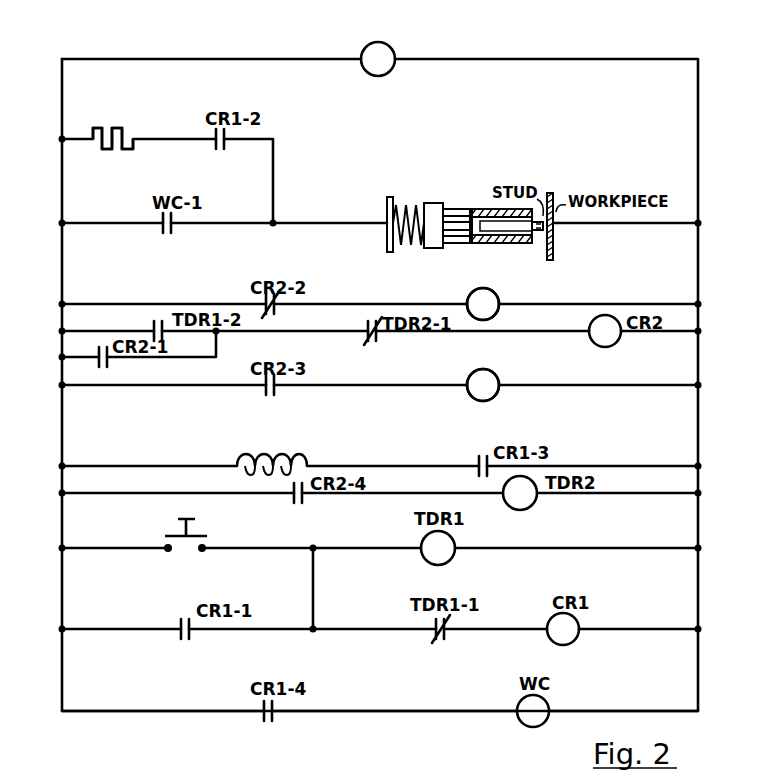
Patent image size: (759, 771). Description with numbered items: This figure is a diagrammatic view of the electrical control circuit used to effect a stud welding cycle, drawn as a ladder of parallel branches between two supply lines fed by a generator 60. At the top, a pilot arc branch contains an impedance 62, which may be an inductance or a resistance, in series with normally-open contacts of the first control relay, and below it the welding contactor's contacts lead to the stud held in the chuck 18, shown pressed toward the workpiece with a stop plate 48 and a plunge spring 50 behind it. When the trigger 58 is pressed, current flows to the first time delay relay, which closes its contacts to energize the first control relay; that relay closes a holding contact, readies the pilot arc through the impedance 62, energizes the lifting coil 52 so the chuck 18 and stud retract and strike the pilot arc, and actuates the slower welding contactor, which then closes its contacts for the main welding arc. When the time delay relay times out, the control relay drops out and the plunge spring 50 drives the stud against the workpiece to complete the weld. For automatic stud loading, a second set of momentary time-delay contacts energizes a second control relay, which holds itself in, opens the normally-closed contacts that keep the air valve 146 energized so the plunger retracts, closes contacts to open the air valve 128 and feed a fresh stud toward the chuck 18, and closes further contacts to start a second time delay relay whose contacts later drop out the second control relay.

The generator 60 is at (392, 54).
The impedance 62 is at (121, 127).
The plunge spring 50 is at (400, 206).
The stop plate 48 is at (388, 250).
The chuck 18 is at (476, 208).
The valve 146 is at (498, 301).
The air valve 128 is at (498, 382).
The lifting coil 52 is at (280, 455).
The trigger 58 is at (200, 532).